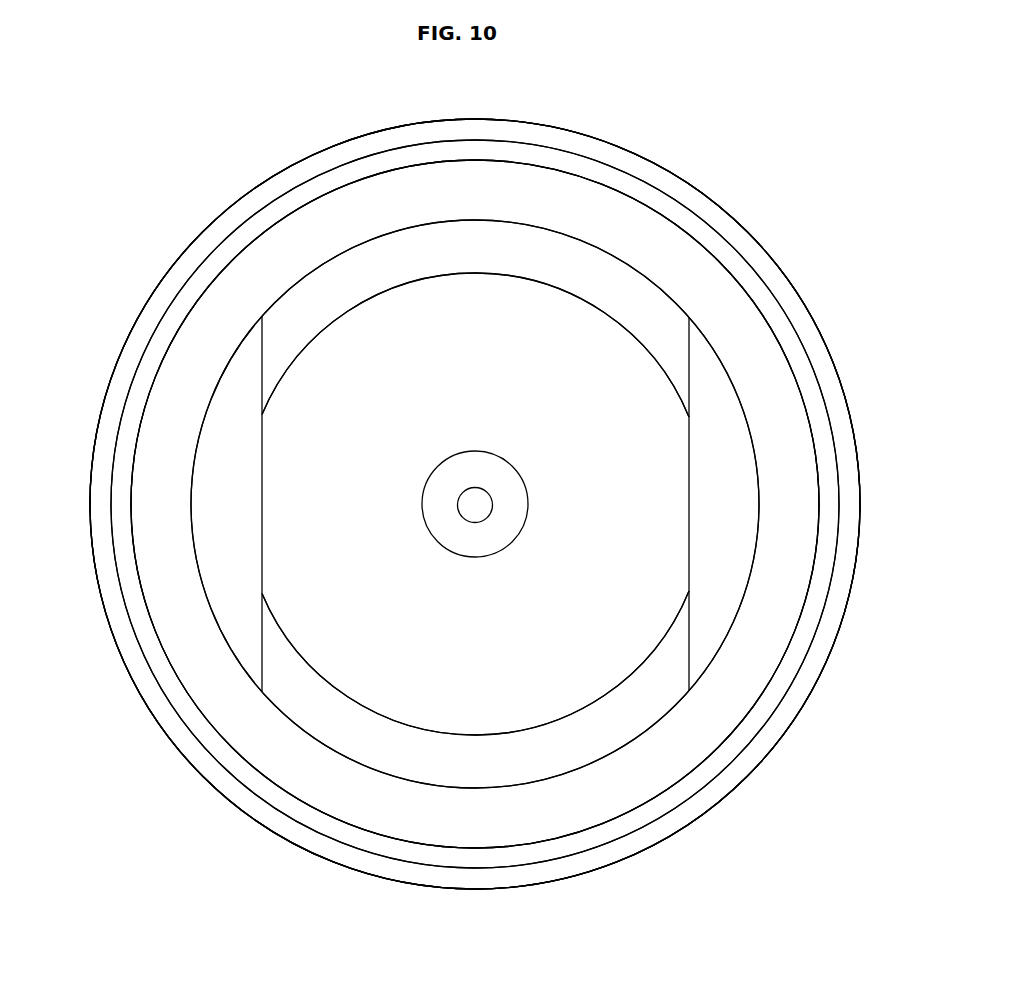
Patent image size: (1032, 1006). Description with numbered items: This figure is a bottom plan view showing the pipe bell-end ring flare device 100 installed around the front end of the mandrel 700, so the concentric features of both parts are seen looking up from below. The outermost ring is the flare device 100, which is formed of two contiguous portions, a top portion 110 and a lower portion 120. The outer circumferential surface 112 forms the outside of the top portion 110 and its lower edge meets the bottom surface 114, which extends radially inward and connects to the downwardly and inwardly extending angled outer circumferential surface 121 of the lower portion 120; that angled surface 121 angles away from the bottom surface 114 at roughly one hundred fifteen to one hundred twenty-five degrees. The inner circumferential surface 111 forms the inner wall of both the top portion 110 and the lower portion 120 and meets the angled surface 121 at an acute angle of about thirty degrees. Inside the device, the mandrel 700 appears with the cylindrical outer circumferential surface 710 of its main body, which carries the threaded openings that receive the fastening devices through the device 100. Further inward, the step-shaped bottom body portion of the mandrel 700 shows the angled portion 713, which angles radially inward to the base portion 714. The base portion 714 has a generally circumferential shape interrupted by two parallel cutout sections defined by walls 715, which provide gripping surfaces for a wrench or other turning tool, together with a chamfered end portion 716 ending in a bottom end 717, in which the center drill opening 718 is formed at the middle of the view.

The pipe bell-end ring flare device 100 is at (88, 401).
The top portion 110 is at (92, 448).
The inner circumferential surface 111 is at (213, 281).
The outer circumferential surface 112 is at (163, 277).
The bottom surface 114 is at (115, 607).
The lower portion 120 is at (108, 572).
The downwardly and inwardly extending angled outer circumferential surface 121 is at (123, 457).
The mandrel 700 is at (260, 218).
The cylindrical outer circumferential surface 710 is at (774, 310).
The angled portion 713 is at (785, 430).
The base portion 714 is at (572, 235).
The walls 715 is at (262, 382).
The chamfered end portion 716 is at (605, 282).
The bottom end 717 is at (435, 697).
The center drill opening 718 is at (431, 315).